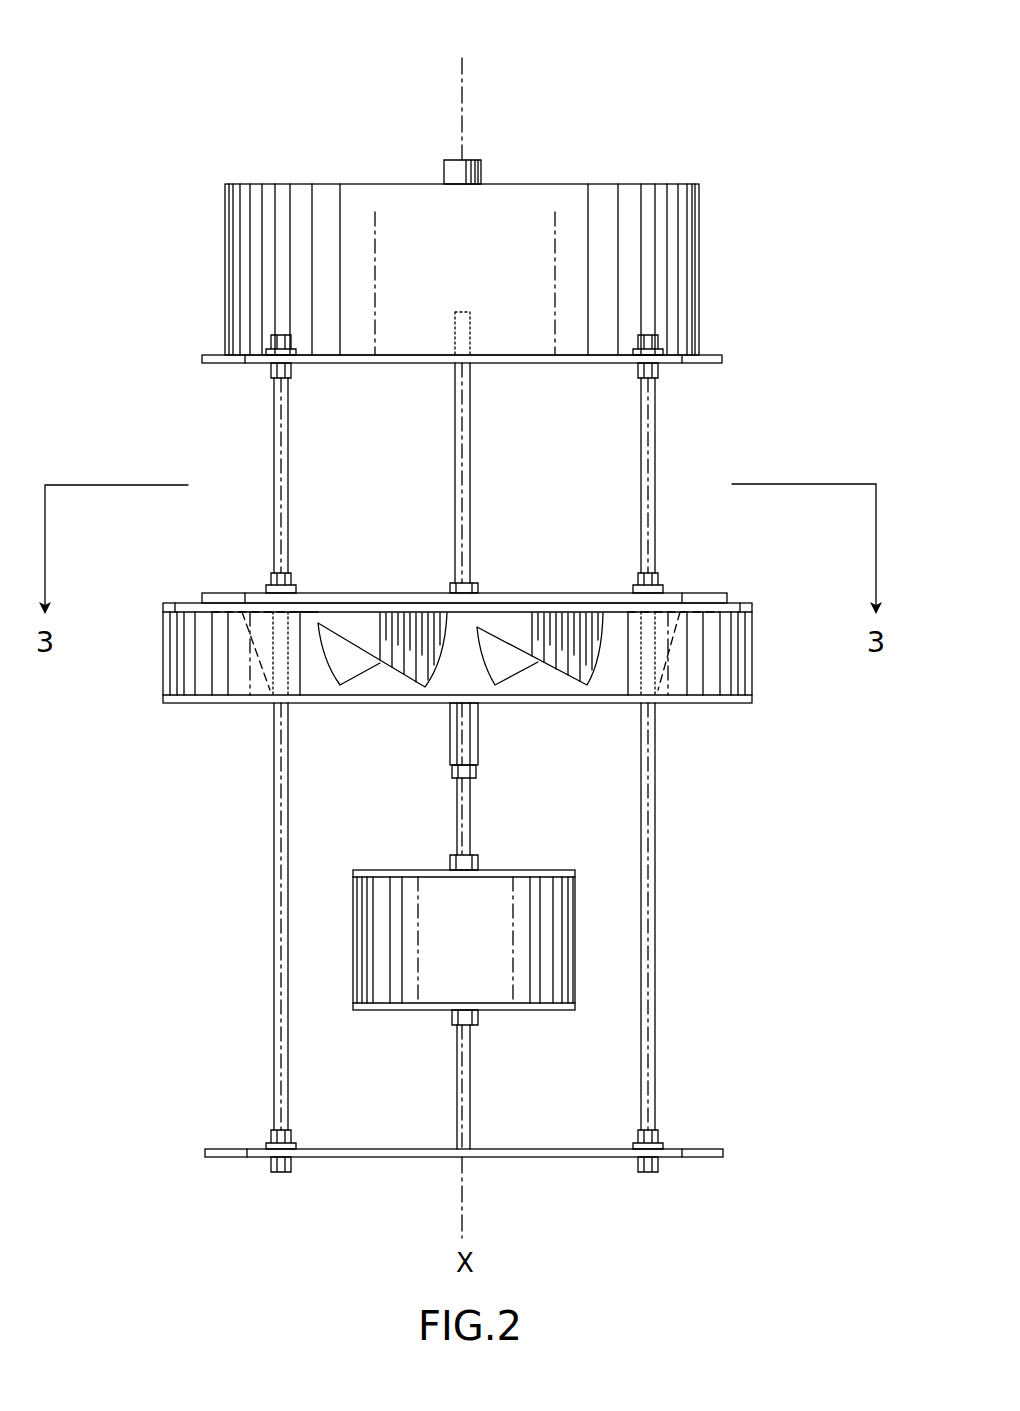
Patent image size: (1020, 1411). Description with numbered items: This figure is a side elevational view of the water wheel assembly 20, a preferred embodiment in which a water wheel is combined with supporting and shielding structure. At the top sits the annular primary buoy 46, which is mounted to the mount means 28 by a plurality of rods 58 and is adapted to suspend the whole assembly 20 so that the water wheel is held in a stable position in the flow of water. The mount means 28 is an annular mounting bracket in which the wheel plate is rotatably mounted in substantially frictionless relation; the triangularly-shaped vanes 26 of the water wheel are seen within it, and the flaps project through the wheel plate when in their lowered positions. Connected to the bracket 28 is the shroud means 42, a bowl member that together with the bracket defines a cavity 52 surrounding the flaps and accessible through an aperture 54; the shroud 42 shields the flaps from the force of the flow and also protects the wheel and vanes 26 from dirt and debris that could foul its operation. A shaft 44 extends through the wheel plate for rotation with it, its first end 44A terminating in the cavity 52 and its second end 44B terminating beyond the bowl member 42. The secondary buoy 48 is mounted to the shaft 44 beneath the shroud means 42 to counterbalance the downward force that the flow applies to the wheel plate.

The water wheel assembly 20 is at (295, 130).
The triangularly-shaped vanes 26 is at (345, 658).
The mount means 28 is at (740, 595).
The shroud means 42 is at (200, 657).
The shaft 44 is at (462, 826).
The first end 44A is at (477, 334).
The second end 44B is at (497, 853).
The primary buoy 46 is at (283, 246).
The secondary buoy 48 is at (392, 966).
The cavity 52 is at (667, 654).
The aperture 54 is at (312, 672).
The rods 58 is at (283, 818).